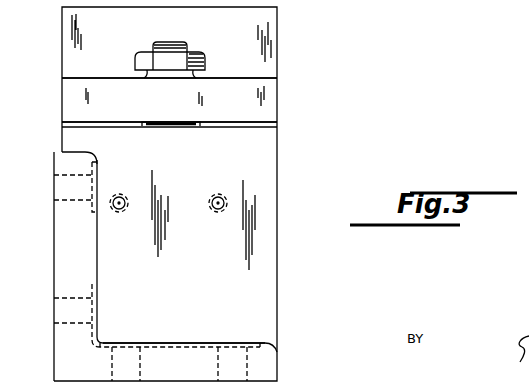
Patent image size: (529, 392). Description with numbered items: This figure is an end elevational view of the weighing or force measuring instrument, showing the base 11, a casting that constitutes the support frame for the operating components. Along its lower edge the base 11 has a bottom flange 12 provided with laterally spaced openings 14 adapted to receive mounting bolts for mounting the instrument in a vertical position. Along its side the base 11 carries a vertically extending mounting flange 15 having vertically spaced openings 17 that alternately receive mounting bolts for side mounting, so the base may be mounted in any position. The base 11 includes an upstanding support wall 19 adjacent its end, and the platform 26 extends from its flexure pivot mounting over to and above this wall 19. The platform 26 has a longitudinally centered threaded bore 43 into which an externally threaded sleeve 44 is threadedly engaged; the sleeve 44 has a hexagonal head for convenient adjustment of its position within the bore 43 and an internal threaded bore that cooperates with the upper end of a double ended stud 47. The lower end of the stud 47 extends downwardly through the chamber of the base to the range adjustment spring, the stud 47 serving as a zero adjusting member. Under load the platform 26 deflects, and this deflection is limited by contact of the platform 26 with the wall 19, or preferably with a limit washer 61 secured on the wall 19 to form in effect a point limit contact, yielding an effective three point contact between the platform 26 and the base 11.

The base 11 is at (283, 319).
The bottom flange 12 is at (185, 371).
The openings 14 is at (117, 346).
The mounting flange 15 is at (54, 256).
The openings 17 is at (60, 180).
The support wall 19 is at (267, 192).
The platform 26 is at (268, 90).
The threaded bore 43 is at (200, 127).
The externally threaded sleeve 44 is at (205, 62).
The double ended stud 47 is at (184, 43).
The limit washer 61 is at (178, 128).